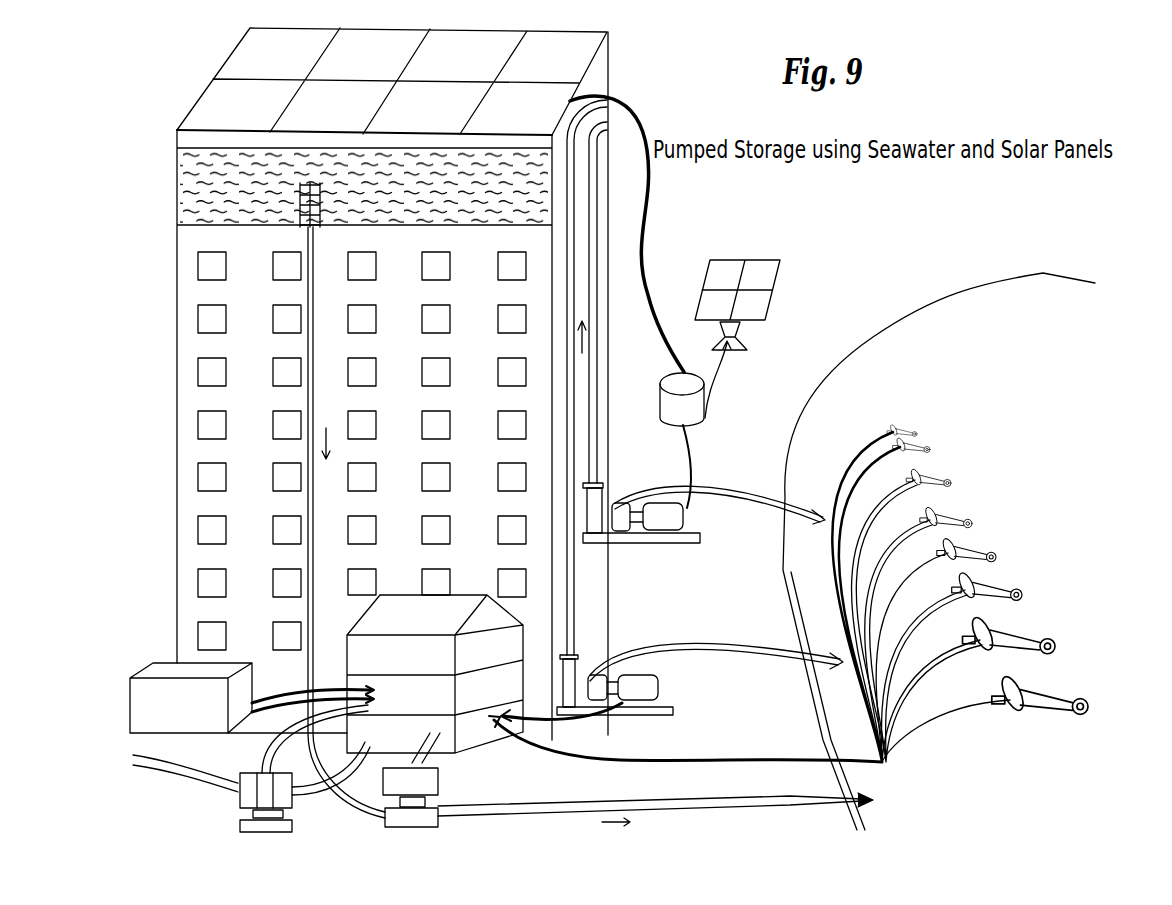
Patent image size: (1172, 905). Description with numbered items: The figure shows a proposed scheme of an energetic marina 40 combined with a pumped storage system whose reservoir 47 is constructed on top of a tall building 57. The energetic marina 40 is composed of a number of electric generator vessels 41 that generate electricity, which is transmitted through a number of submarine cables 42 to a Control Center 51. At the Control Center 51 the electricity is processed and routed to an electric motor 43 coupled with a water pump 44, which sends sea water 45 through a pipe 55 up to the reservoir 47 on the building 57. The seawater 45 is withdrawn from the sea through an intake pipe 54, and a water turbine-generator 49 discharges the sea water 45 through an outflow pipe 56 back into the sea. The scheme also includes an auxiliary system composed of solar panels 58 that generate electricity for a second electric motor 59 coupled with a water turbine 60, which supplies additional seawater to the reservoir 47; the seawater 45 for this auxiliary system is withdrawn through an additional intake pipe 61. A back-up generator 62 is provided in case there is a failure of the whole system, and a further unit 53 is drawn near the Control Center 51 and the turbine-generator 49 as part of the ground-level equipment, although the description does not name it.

The energetic marina 40 is at (1143, 707).
The electric generator vessels 41 is at (957, 650).
The submarine cables 42 is at (880, 752).
The electric motor 43 is at (643, 690).
The water pump 44 is at (580, 673).
The sea water 45 is at (817, 583).
The reservoir 47 is at (250, 178).
The water turbine-generator 49 is at (413, 778).
The Control Center 51 is at (467, 688).
The intake pump unit 53 is at (265, 790).
The intake pipe 54 is at (695, 645).
The pipe 55 is at (568, 570).
The outflow pipe 56 is at (585, 808).
The tall building 57 is at (246, 393).
The solar panels 58 is at (268, 62).
The electric motor 59 is at (672, 512).
The water turbine 60 is at (600, 513).
The additional intake pipe 61 is at (708, 488).
The back-up generator 62 is at (185, 695).